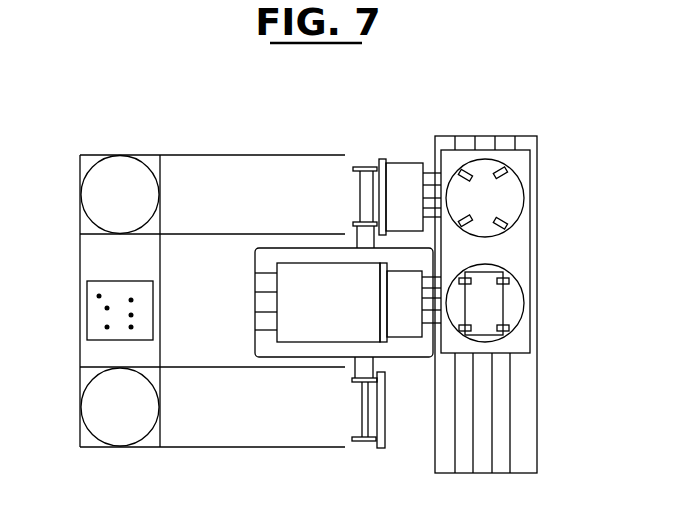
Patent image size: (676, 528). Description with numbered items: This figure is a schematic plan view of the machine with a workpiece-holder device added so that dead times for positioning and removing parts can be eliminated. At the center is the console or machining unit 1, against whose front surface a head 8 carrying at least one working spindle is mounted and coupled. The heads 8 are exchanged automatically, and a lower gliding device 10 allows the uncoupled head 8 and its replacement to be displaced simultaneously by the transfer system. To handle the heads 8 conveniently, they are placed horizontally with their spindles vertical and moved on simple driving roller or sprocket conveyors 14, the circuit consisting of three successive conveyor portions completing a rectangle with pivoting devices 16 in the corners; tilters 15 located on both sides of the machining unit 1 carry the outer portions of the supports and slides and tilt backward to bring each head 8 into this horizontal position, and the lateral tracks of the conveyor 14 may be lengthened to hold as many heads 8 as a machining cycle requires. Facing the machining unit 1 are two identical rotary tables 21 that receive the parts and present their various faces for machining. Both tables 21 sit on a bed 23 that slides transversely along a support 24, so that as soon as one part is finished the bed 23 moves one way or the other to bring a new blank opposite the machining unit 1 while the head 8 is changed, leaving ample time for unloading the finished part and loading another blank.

The machining unit 1 is at (327, 315).
The head 8 is at (102, 318).
The lower gliding device 10 is at (383, 162).
The conveyor 14 is at (259, 192).
The tilter 15 is at (356, 167).
The pivoting device 16 is at (120, 182).
The rotary table 21 is at (503, 193).
The bed 23 is at (510, 252).
The support 24 is at (518, 403).